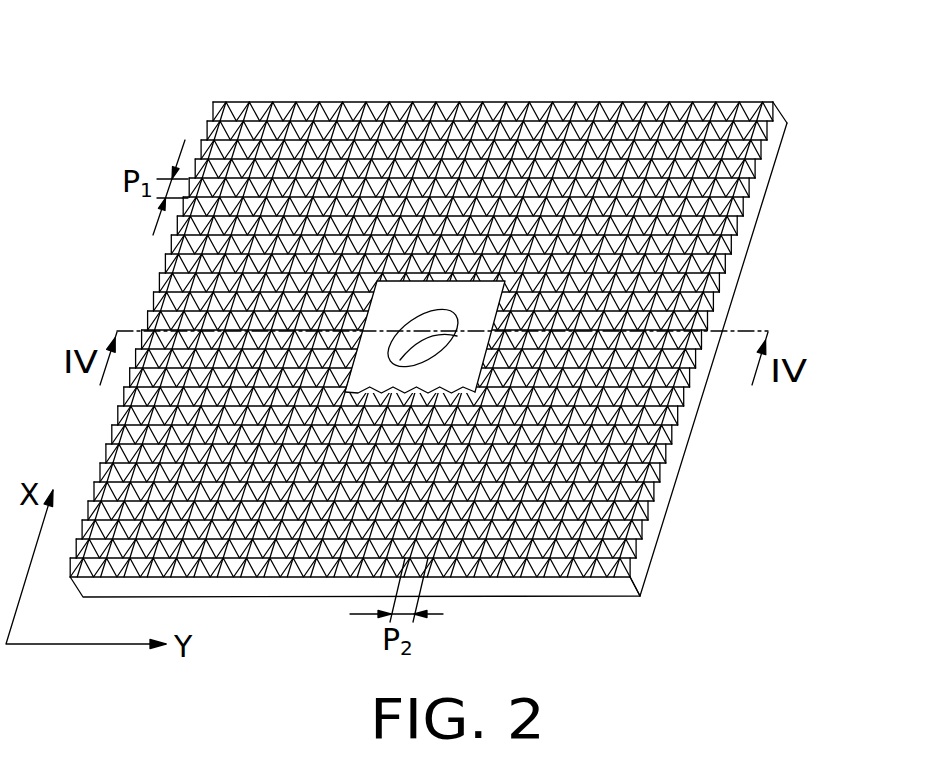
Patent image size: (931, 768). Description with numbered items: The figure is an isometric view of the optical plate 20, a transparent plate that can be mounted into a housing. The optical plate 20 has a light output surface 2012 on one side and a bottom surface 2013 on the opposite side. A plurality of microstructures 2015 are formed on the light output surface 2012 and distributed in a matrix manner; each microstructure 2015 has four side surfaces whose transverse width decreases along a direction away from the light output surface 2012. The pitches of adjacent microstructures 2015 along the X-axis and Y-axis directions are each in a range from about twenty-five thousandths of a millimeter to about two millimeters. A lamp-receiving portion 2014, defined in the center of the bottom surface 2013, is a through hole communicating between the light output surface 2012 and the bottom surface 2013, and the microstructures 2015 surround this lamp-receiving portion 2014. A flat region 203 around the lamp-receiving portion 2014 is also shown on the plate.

The optical plate 20 is at (131, 73).
The flat portion 203 is at (482, 299).
The lamp-receiving portion 2014 is at (428, 348).
The bottom surface 2013 is at (765, 200).
The microstructures 2015 is at (655, 463).
The light output surface 2012 is at (655, 502).